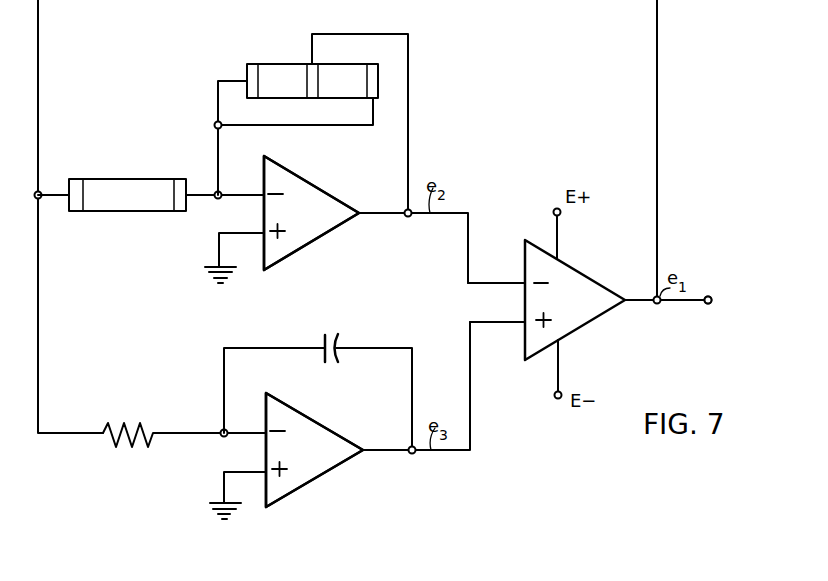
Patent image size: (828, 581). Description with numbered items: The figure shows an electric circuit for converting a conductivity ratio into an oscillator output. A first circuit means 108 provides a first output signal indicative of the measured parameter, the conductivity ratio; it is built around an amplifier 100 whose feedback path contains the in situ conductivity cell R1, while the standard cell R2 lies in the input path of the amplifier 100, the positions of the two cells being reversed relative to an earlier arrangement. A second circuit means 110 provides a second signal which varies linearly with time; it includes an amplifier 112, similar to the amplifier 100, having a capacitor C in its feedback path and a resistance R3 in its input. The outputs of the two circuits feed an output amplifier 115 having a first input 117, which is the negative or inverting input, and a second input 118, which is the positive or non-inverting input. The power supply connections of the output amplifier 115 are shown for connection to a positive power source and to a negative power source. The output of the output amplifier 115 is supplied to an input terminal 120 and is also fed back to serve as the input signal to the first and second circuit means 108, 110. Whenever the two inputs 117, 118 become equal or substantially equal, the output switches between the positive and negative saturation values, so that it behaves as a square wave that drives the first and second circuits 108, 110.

The amplifier 100 is at (312, 241).
The first circuit means 108 is at (353, 175).
The second circuit means 110 is at (348, 413).
The amplifier 112 is at (330, 472).
The output amplifier 115 is at (608, 312).
The first input 117 is at (492, 282).
The second input 118 is at (508, 323).
The input terminal 120 is at (711, 296).
The in situ conductivity cell R1 is at (270, 64).
The standard cell R2 is at (110, 179).
The resistance R3 is at (124, 423).
The capacitor C is at (330, 362).